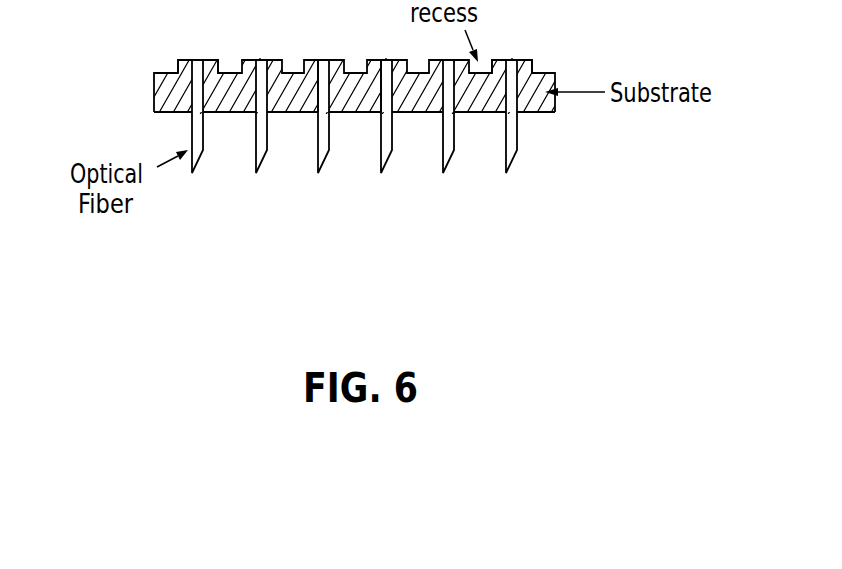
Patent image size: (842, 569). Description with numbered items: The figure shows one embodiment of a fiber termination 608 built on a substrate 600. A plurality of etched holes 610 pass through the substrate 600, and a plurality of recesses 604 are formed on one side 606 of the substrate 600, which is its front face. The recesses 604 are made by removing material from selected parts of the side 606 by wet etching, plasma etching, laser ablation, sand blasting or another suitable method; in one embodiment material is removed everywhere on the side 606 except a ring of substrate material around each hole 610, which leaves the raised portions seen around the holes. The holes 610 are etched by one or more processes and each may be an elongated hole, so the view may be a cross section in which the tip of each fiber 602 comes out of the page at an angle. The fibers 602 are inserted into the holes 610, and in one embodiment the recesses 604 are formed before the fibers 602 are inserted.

The substrate 600 is at (344, 93).
The fiber 602 is at (202, 147).
The recess 604 is at (540, 64).
The side of the substrate 606 is at (212, 60).
The fiber termination 608 is at (365, 148).
The etched hole 610 is at (387, 62).